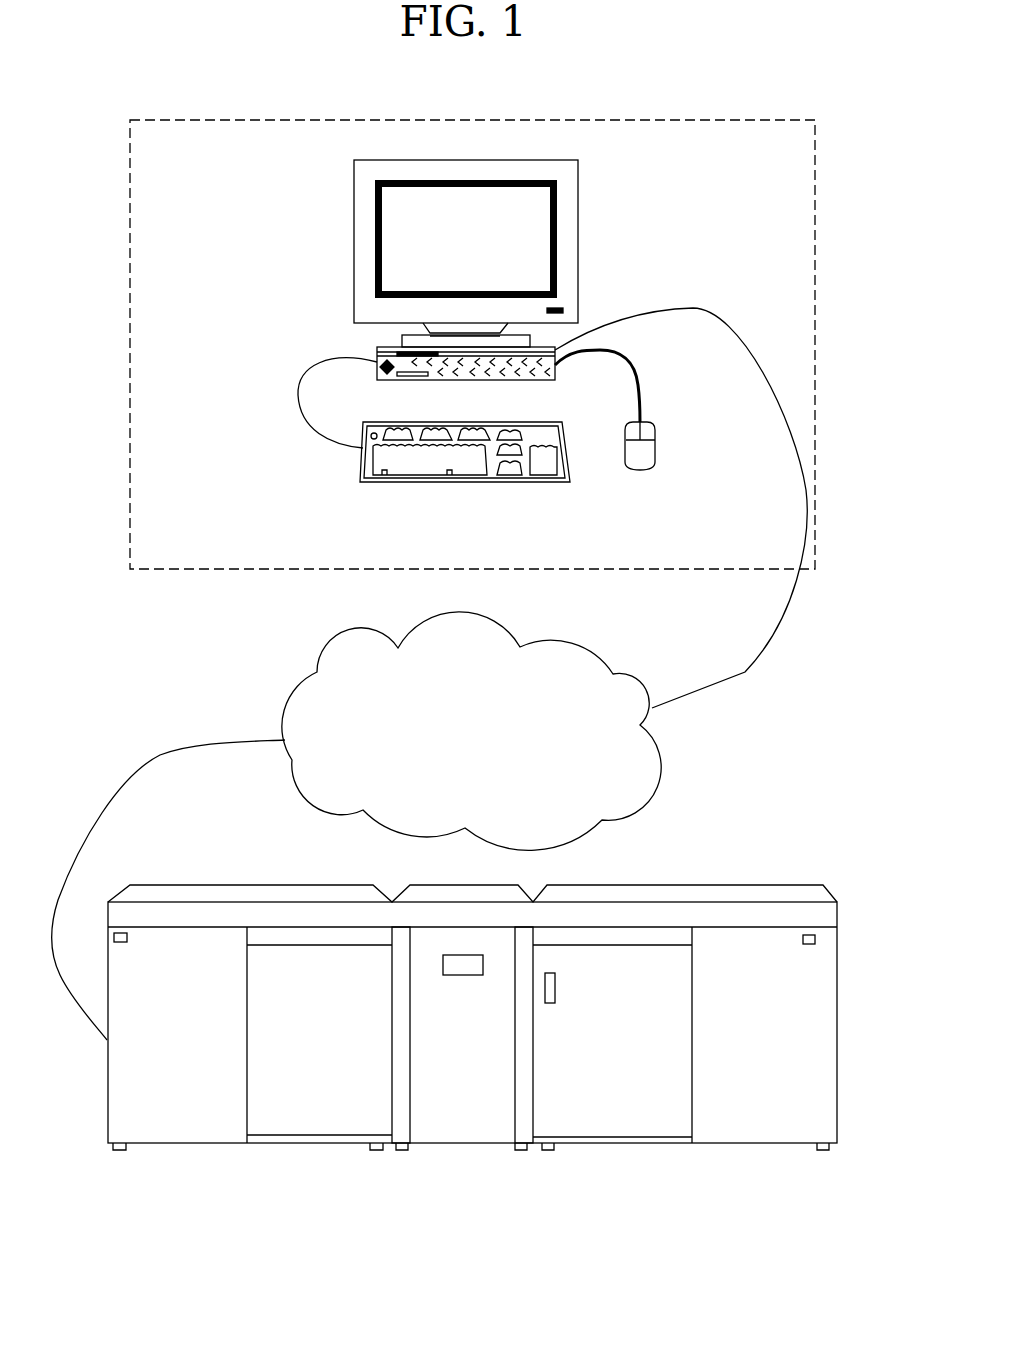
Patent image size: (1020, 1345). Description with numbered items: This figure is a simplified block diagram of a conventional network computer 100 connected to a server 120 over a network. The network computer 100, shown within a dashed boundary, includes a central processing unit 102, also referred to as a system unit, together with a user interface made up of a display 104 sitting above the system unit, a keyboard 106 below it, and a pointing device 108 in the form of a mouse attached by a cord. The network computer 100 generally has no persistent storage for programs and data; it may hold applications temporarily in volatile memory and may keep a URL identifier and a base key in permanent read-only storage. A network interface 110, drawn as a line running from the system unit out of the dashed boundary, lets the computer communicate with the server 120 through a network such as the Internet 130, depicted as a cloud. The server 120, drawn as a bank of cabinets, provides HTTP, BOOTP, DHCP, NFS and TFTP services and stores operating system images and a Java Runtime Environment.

The network computer 100 is at (815, 195).
The central processing unit 102 is at (470, 380).
The display 104 is at (583, 260).
The keyboard 106 is at (558, 483).
The pointing device 108 is at (657, 450).
The network interface 110 is at (686, 310).
The server 120 is at (702, 883).
The Internet 130 is at (490, 773).